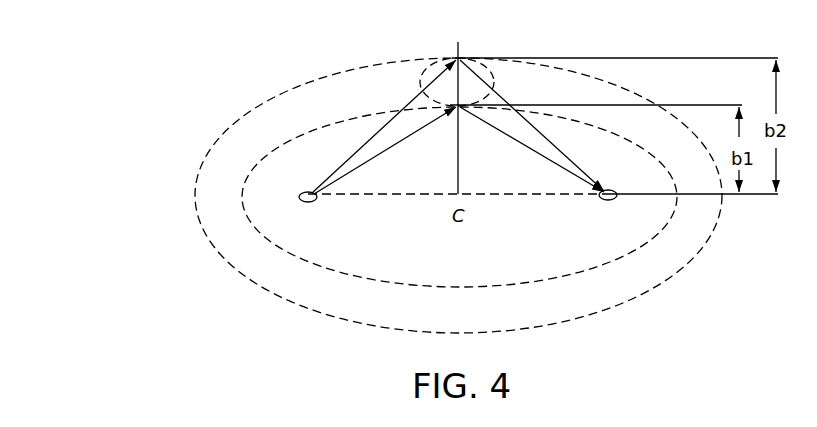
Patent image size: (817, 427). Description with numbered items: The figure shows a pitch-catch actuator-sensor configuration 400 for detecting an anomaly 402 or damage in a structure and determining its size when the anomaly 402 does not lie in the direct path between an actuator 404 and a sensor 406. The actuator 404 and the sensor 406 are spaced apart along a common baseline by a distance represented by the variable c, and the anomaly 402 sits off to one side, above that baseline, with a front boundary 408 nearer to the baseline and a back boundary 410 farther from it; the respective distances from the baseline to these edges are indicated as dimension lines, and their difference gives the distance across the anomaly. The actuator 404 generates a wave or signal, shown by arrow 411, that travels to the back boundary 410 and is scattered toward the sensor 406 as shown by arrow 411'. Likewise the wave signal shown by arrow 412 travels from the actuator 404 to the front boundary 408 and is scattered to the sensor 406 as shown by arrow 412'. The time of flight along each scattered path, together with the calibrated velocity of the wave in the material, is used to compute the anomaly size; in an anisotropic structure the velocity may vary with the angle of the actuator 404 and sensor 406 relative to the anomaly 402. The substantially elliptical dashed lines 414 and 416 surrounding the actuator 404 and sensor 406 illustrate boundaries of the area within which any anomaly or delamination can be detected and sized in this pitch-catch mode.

The pitch-catch actuator-sensor configuration 400 is at (185, 119).
The anomaly 402 is at (420, 75).
The actuator 404 is at (312, 203).
The sensor 406 is at (608, 201).
The front boundary 408 is at (453, 110).
The back boundary 410 is at (458, 48).
The arrow representing wave signal to back boundary 411 is at (373, 126).
The arrow representing wave signal scattered from back boundary 411' is at (553, 125).
The arrow representing wave signal to front boundary 412 is at (385, 150).
The arrow representing wave signal scattered from front boundary 412' is at (532, 149).
The elliptically shaped dashed line 414 is at (230, 268).
The elliptically shaped dashed line 416 is at (462, 287).